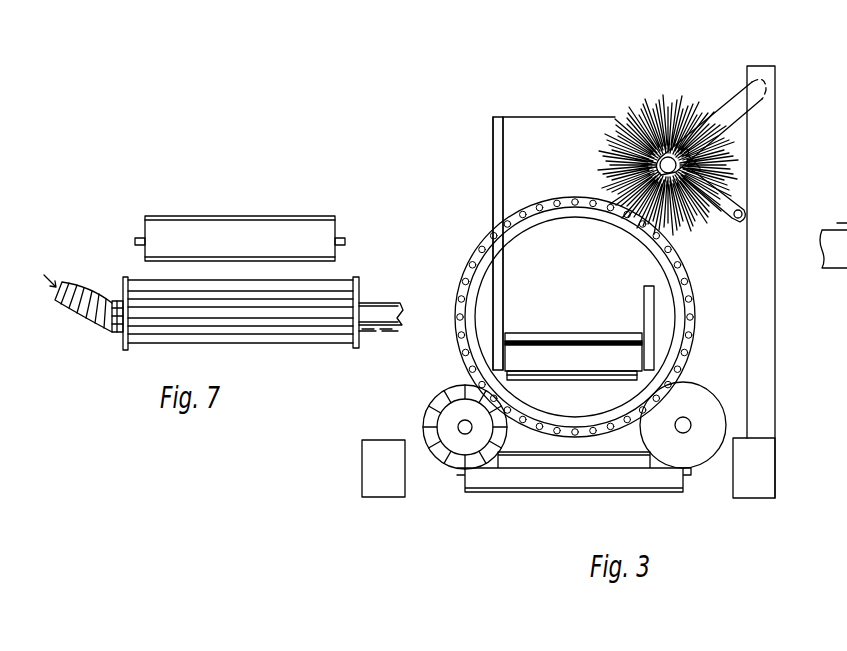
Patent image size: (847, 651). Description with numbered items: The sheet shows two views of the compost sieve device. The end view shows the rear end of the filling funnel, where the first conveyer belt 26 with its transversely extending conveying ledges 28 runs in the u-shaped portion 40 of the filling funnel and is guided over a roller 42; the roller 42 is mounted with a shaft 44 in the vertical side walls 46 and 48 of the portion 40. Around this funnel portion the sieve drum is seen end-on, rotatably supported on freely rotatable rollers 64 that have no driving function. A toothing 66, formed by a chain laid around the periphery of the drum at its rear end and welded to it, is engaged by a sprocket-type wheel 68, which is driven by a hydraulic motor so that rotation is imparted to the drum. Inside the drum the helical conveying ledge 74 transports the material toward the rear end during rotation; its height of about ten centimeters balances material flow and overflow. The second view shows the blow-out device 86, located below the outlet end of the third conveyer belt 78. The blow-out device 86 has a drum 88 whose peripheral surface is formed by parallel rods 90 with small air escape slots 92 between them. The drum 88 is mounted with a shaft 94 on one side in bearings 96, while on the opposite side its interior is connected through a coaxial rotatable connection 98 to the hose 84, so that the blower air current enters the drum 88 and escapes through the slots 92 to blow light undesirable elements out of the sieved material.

In FIG. 3, the first conveyer belt 26 is at (640, 338).
In FIG. 3, the conveying ledges 28 is at (562, 334).
In FIG. 3, the portion of the filling funnel 40 is at (493, 293).
In FIG. 3, the roller 42 is at (682, 353).
In FIG. 3, the shaft 44 is at (500, 354).
In FIG. 3, the vertical side wall 46 is at (503, 276).
In FIG. 3, the vertical side wall 48 is at (644, 296).
In FIG. 3, the rollers 64 is at (452, 384).
In FIG. 3, the toothing 66 is at (688, 273).
In FIG. 3, the wheel 68 is at (460, 442).
In FIG. 3, the helical conveying ledge 74 is at (592, 420).
In FIG. 7, the third conveyer belt 78 is at (263, 216).
In FIG. 7, the hose 84 is at (81, 320).
In FIG. 7, the blow-out device 86 is at (247, 335).
In FIG. 7, the drum 88 is at (358, 292).
In FIG. 7, the rods 90 is at (148, 350).
In FIG. 7, the air escape slots 92 is at (186, 320).
In FIG. 7, the shaft 94 is at (388, 306).
In FIG. 7, the bearings 96 is at (391, 335).
In FIG. 7, the rotatable connection 98 is at (115, 333).